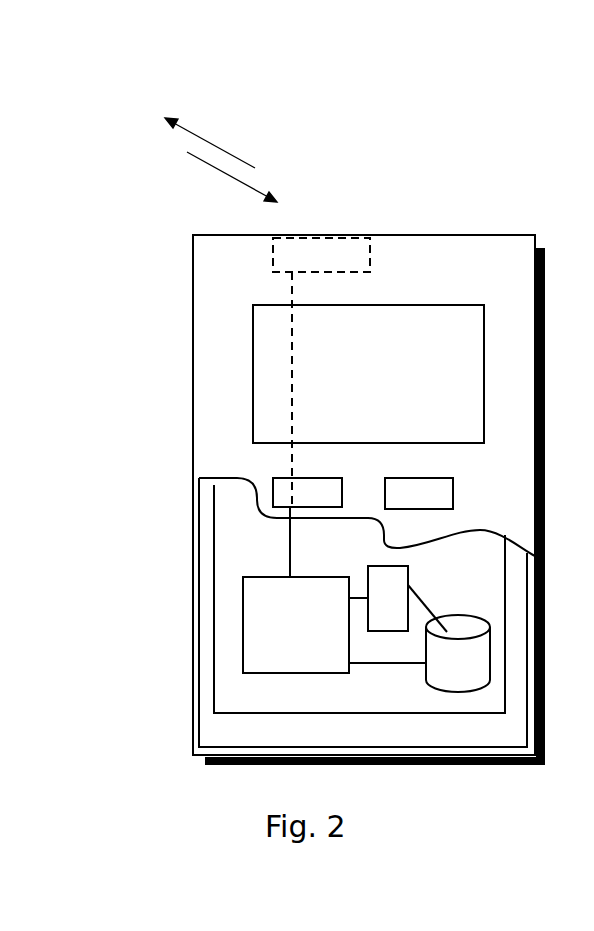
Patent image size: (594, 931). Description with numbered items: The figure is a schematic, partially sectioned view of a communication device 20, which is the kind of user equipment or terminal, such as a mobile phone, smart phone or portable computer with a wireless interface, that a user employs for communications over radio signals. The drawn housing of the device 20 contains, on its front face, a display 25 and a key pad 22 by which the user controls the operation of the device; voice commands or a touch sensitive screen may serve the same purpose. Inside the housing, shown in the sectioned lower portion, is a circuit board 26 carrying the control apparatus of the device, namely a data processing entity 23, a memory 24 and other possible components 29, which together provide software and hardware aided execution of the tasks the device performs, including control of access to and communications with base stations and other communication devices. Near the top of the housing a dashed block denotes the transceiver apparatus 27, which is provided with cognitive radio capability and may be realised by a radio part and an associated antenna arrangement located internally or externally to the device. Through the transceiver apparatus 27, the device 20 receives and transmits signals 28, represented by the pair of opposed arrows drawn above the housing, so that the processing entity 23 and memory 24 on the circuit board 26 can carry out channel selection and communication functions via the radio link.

The communication device 20 is at (192, 292).
The key pad 22 is at (282, 490).
The data processing entity 23 is at (250, 597).
The memory 24 is at (450, 665).
The display 25 is at (275, 358).
The circuit board 26 is at (241, 700).
The transceiver apparatus 27 is at (303, 253).
The signals 28 is at (187, 130).
The other possible components 29 is at (388, 582).